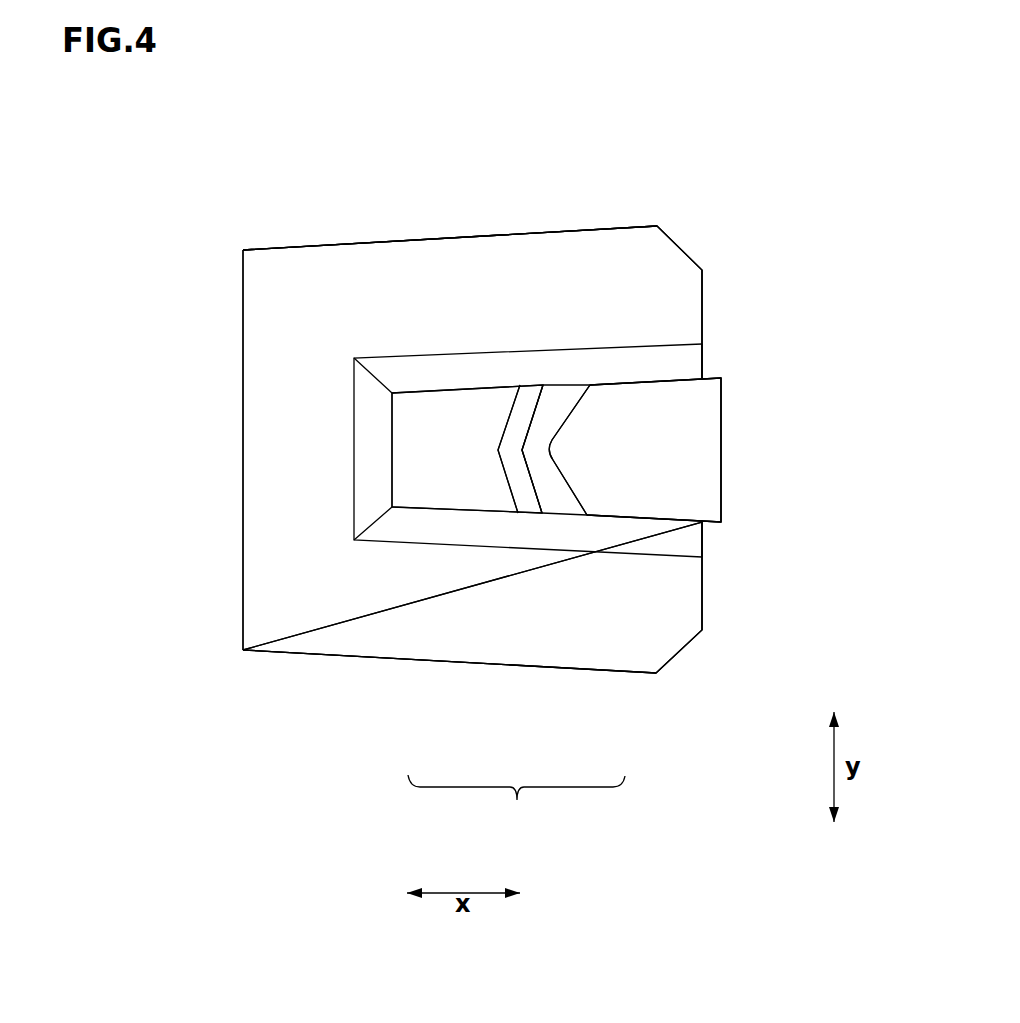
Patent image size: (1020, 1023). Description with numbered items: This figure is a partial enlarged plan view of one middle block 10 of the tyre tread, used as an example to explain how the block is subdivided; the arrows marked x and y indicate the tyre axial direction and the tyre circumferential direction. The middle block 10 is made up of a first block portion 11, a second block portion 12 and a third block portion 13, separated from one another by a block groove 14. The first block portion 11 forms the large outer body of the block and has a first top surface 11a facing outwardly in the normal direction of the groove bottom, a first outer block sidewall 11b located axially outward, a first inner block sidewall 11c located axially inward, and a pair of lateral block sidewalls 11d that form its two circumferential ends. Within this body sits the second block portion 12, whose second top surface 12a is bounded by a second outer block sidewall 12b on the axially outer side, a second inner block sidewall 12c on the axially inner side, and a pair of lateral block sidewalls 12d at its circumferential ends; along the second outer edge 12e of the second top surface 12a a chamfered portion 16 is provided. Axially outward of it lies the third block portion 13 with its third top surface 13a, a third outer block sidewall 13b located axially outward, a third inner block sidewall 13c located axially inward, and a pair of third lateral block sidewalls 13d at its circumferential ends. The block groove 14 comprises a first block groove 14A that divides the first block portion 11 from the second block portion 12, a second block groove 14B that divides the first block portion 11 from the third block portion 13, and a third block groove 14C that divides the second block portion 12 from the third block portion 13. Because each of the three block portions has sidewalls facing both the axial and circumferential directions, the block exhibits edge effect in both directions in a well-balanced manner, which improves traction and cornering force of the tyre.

The middle block 10 is at (707, 152).
The first block portion 11 is at (292, 598).
The first top surface 11a is at (285, 304).
The first outer block sidewall 11b is at (703, 317).
The first inner block sidewall 11c is at (243, 520).
The lateral block sidewalls 11d is at (313, 243).
The second block portion 12 is at (452, 443).
The second top surface 12a is at (422, 438).
The second outer block sidewall 12b is at (530, 427).
The second inner block sidewall 12c is at (388, 431).
The lateral block sidewalls 12d is at (468, 387).
The second outer edge 12e is at (507, 465).
The third block portion 13 is at (670, 476).
The third top surface 13a is at (647, 432).
The third outer block sidewall 13b is at (722, 443).
The third inner block sidewall 13c is at (573, 402).
The third lateral block sidewalls 13d is at (640, 377).
The block groove 14 is at (516, 803).
The first block groove 14A is at (373, 520).
The second block groove 14B is at (646, 535).
The third block groove 14C is at (546, 483).
The chamfered portion 16 is at (523, 403).